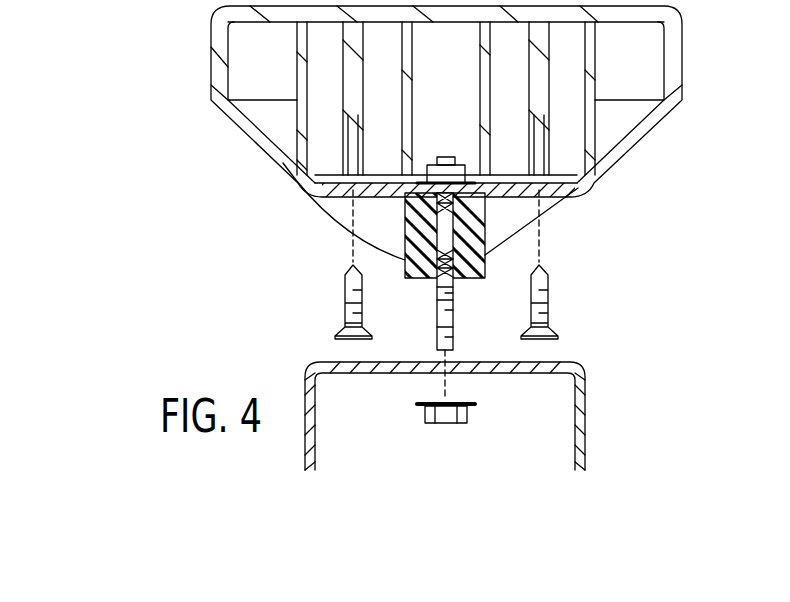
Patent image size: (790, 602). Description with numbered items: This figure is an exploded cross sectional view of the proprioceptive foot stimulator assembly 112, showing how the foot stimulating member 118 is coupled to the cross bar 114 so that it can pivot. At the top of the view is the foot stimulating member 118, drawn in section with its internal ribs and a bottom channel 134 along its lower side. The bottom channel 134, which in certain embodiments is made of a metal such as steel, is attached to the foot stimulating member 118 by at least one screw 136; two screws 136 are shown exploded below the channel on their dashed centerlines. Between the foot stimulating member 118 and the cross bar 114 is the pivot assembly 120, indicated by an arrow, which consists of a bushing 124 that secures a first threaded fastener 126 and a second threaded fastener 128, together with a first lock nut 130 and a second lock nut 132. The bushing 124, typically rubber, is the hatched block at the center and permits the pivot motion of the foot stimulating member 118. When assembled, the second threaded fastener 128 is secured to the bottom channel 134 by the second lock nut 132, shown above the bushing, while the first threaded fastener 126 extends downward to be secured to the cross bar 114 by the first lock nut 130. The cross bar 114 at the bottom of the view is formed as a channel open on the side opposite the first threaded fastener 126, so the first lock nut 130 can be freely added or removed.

The proprioceptive foot stimulator assembly 112 is at (178, 238).
The cross bar 114 is at (587, 422).
The foot stimulating member 118 is at (640, 60).
The pivot assembly 120 is at (391, 219).
The bushing 124 is at (472, 279).
The first threaded fastener 126 is at (437, 337).
The second threaded fastener 128 is at (483, 215).
The first lock nut 130 is at (445, 418).
The second lock nut 132 is at (430, 162).
The bottom channel 134 is at (327, 193).
The screw 136 is at (343, 290).